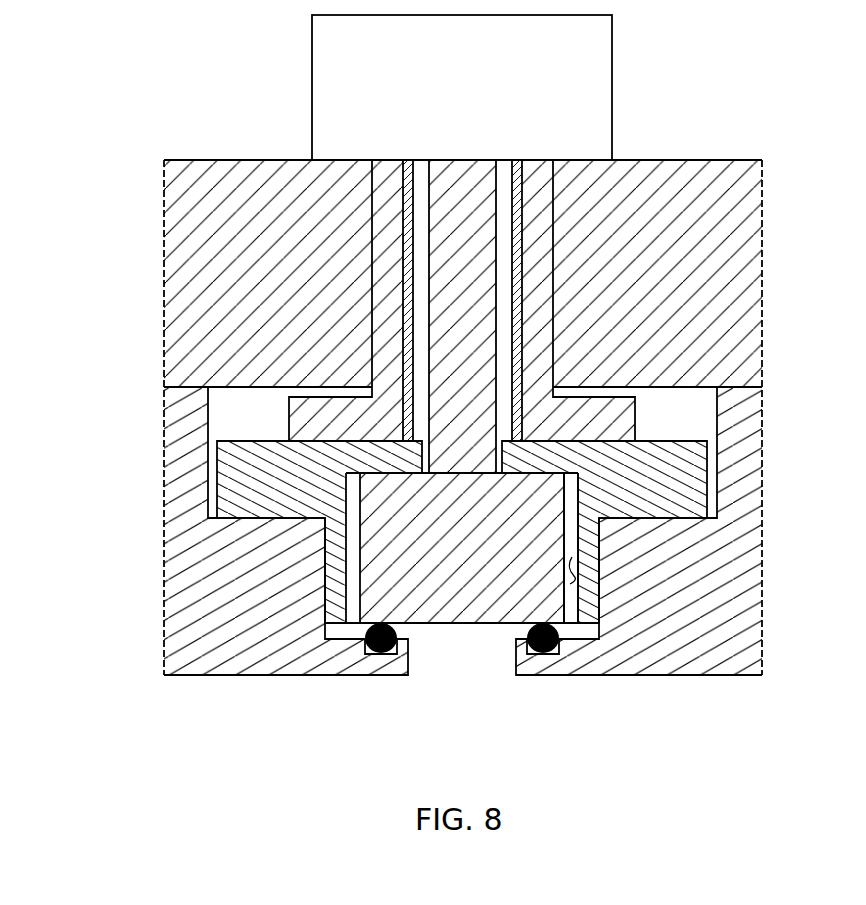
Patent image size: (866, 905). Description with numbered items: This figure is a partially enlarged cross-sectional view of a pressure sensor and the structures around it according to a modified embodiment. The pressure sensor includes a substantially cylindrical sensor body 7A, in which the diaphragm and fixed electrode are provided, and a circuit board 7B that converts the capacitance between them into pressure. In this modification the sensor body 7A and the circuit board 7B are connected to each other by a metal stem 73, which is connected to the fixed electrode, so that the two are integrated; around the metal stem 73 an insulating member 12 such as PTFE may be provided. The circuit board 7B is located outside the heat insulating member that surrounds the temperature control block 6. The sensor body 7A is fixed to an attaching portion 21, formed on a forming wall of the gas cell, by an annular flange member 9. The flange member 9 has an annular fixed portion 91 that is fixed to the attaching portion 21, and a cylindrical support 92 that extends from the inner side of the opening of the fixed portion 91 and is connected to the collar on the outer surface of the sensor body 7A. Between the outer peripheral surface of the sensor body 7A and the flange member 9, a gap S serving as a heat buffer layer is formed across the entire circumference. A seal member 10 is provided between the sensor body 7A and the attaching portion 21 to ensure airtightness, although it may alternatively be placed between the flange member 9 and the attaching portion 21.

The circuit board 7B is at (312, 68).
The temperature control block 6 is at (193, 160).
The insulating member 12 is at (522, 238).
The metal stem 73 is at (496, 327).
The attaching portion 21 is at (208, 423).
The flange member 9 is at (54, 494).
The fixed portion 91 is at (217, 487).
The cylindrical support 92 is at (325, 583).
The gap S is at (588, 581).
The sensor body 7A is at (463, 624).
The seal member 10 is at (556, 652).